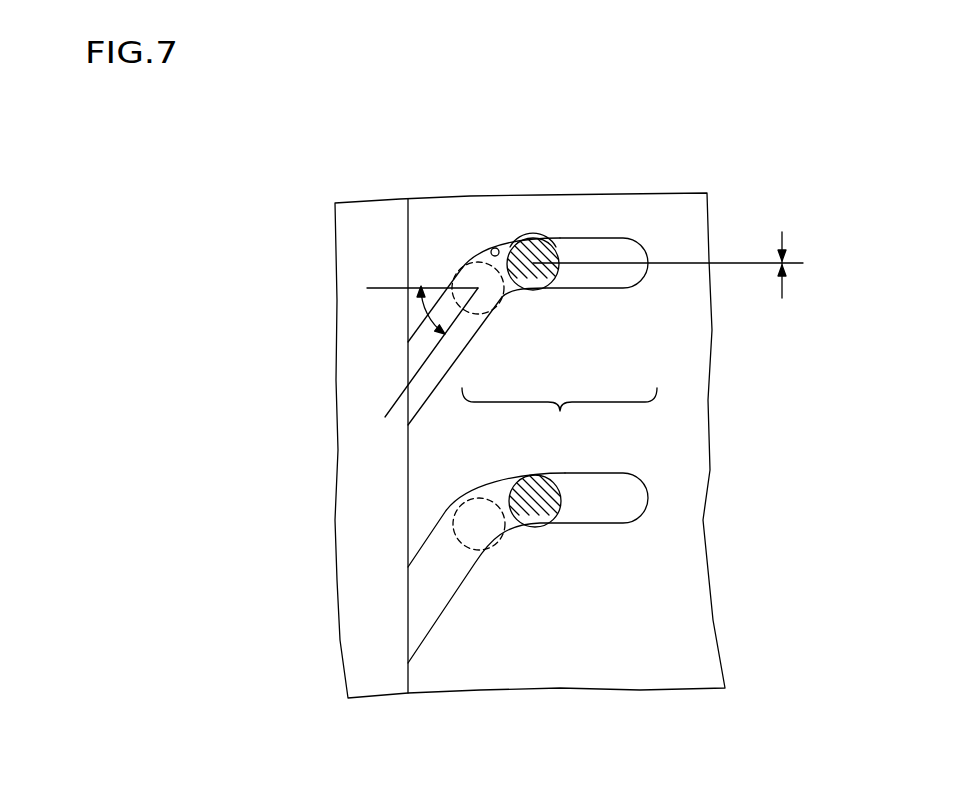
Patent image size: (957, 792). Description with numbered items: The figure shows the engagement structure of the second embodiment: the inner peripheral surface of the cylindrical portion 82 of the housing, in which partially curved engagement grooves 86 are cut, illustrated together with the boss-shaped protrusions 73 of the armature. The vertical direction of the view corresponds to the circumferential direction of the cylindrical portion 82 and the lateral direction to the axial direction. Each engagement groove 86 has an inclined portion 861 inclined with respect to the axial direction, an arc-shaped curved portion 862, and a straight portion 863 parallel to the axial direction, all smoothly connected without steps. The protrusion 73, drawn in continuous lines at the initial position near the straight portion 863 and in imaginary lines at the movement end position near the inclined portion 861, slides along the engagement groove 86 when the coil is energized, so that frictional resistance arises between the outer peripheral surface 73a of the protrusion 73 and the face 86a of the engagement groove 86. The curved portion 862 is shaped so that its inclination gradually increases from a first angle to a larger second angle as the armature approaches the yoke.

The cylindrical portion 82 is at (352, 232).
The engagement groove 86 is at (632, 501).
The inclined portion 861 is at (452, 337).
The curved portion 862 is at (510, 287).
The straight portion 863 is at (585, 273).
The face of engagement groove 86a is at (491, 249).
The protrusion 73 is at (550, 242).
The outer peripheral surface of protrusion 73a is at (530, 238).